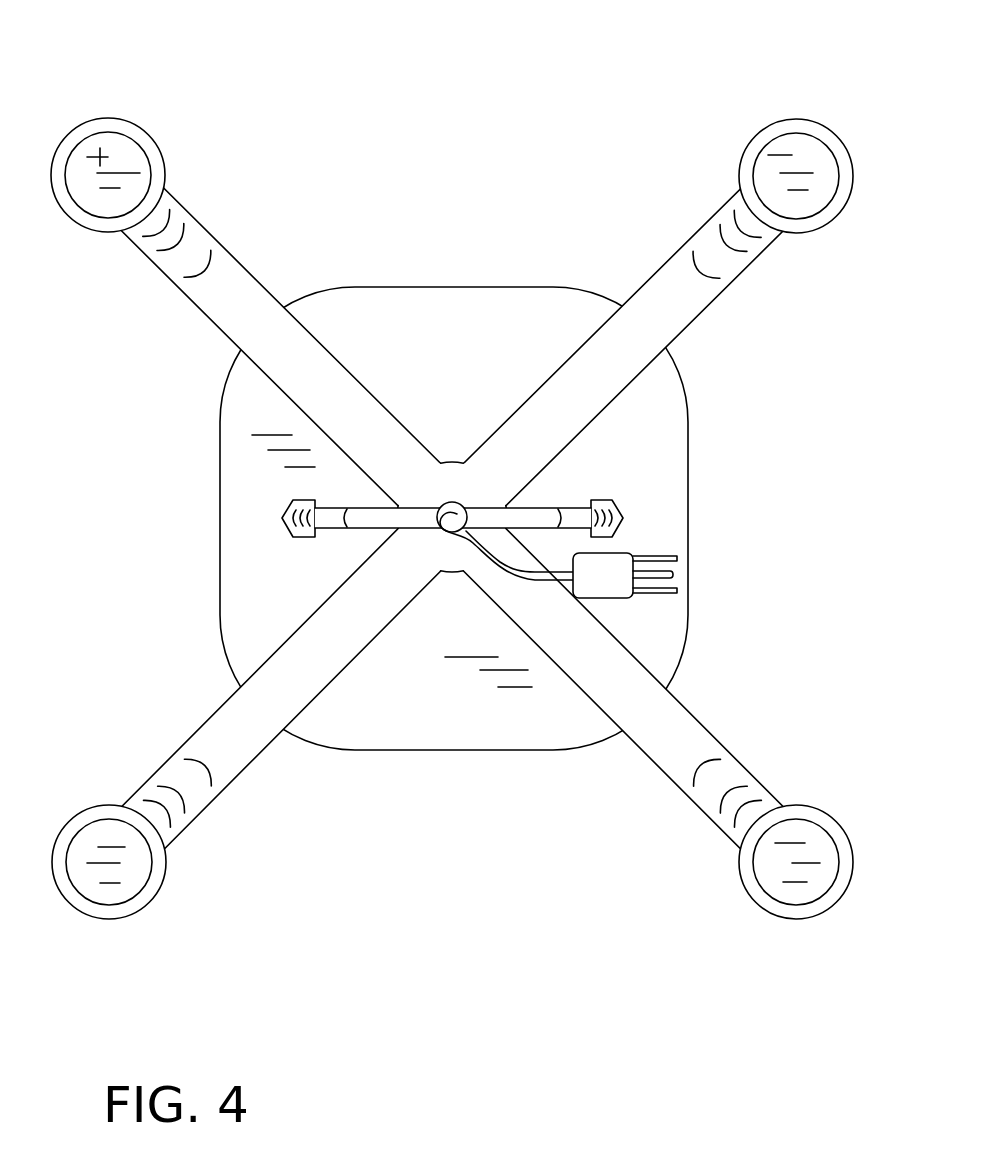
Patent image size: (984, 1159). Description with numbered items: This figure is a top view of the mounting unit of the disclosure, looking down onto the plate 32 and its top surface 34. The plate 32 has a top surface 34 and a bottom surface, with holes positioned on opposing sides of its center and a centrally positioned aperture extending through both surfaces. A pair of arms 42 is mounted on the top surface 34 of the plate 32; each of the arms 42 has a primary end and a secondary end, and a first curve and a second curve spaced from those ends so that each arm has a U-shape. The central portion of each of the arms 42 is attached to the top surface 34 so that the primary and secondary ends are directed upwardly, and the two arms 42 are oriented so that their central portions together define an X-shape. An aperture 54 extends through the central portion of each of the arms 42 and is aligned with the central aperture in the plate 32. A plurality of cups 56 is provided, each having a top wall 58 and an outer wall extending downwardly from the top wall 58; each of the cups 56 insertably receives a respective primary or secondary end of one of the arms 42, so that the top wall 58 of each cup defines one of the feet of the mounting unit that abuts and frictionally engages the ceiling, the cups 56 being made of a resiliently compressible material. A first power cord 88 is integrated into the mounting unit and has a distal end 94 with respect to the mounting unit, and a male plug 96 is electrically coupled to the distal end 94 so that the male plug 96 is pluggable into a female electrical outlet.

The plate 32 is at (392, 287).
The top surface 34 is at (504, 318).
The arms 42 is at (193, 303).
The aperture 54 is at (452, 504).
The cups 56 is at (152, 131).
The top wall 58 is at (100, 150).
The first power cord 88 is at (533, 580).
The distal end 94 is at (572, 598).
The male plug 96 is at (628, 598).